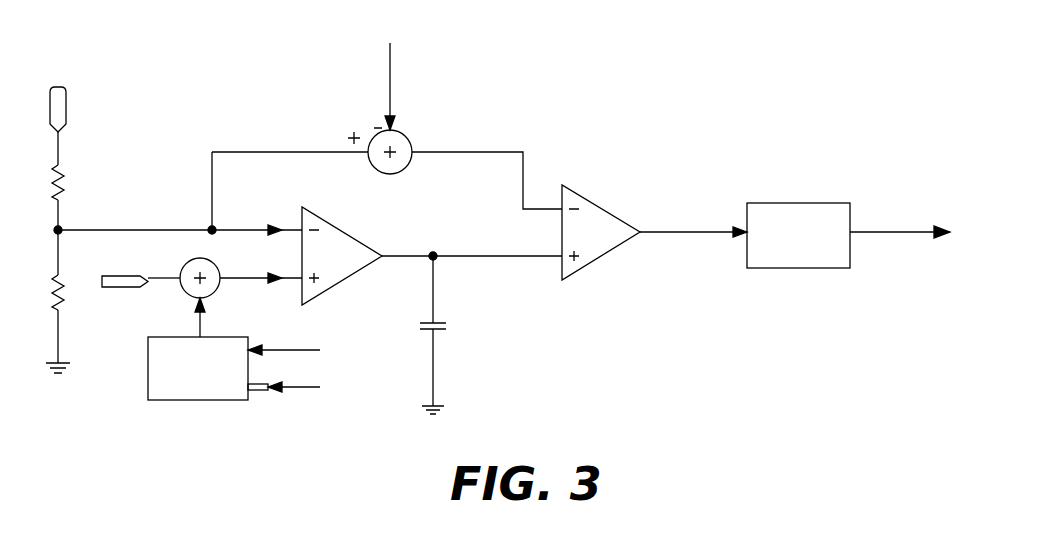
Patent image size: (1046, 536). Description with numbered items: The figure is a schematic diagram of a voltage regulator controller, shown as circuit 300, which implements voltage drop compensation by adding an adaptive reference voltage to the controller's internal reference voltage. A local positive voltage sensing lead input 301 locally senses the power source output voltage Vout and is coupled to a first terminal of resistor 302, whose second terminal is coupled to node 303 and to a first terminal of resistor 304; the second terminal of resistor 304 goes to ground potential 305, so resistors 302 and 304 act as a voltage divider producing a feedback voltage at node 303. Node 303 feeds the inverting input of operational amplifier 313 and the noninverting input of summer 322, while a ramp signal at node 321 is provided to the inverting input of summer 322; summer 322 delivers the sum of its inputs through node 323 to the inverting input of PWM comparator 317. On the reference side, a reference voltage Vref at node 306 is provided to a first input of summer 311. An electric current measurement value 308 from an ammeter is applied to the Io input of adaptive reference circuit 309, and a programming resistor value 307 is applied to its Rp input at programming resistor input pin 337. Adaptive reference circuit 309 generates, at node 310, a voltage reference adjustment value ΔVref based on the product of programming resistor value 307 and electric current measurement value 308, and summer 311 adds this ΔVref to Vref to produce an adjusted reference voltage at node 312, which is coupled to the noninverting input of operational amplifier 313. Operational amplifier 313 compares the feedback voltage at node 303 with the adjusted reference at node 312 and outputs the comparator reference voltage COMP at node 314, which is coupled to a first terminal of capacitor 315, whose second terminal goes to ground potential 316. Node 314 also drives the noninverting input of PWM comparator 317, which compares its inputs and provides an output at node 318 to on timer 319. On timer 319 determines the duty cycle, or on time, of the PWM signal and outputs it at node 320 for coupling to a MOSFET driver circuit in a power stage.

The circuit 300 is at (213, 62).
The local positive voltage sensing lead input 301 is at (76, 69).
The resistor 302 is at (63, 165).
The node 303 is at (146, 230).
The resistor 304 is at (63, 275).
The ground potential 305 is at (64, 361).
The node 306 is at (136, 289).
The programming resistor value 307 is at (318, 388).
The electric current measurement value 308 is at (316, 349).
The adaptive reference circuit 309 is at (178, 401).
The node 310 is at (196, 330).
The summer 311 is at (184, 268).
The node 312 is at (250, 277).
The operational amplifier 313 is at (340, 232).
The node 314 is at (480, 255).
The capacitor 315 is at (442, 323).
The ground potential 316 is at (442, 406).
The PWM comparator 317 is at (622, 221).
The node 318 is at (676, 232).
The on timer 319 is at (792, 203).
The node 320 is at (900, 235).
The node 321 is at (388, 52).
The summer 322 is at (409, 137).
The node 323 is at (499, 151).
The programming resistor input pin 337 is at (258, 390).